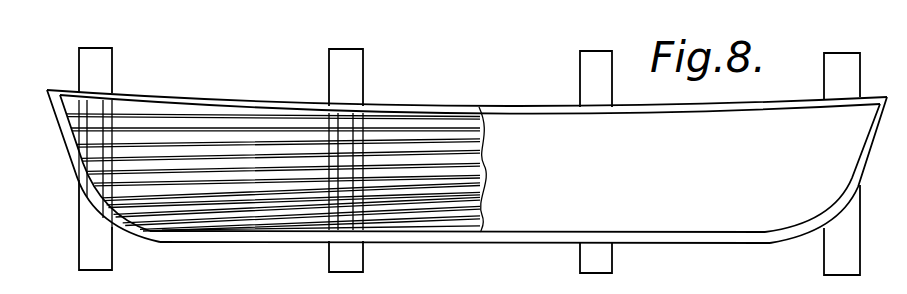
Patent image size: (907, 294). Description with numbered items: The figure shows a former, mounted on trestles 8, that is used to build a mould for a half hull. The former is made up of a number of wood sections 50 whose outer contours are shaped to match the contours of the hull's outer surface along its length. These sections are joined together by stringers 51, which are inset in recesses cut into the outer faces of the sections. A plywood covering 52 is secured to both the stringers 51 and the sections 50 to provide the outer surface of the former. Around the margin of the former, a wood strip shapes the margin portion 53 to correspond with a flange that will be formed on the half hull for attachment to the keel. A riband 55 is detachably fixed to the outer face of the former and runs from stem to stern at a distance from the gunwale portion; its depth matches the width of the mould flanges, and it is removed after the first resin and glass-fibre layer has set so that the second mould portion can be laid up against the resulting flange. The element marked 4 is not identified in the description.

The trestles 8 is at (113, 62).
The stem 4 is at (78, 173).
The wood sections 50 is at (332, 123).
The stringers 51 is at (165, 167).
The plywood covering 52 is at (537, 213).
The margin portion 53 is at (697, 238).
The riband 55 is at (562, 118).